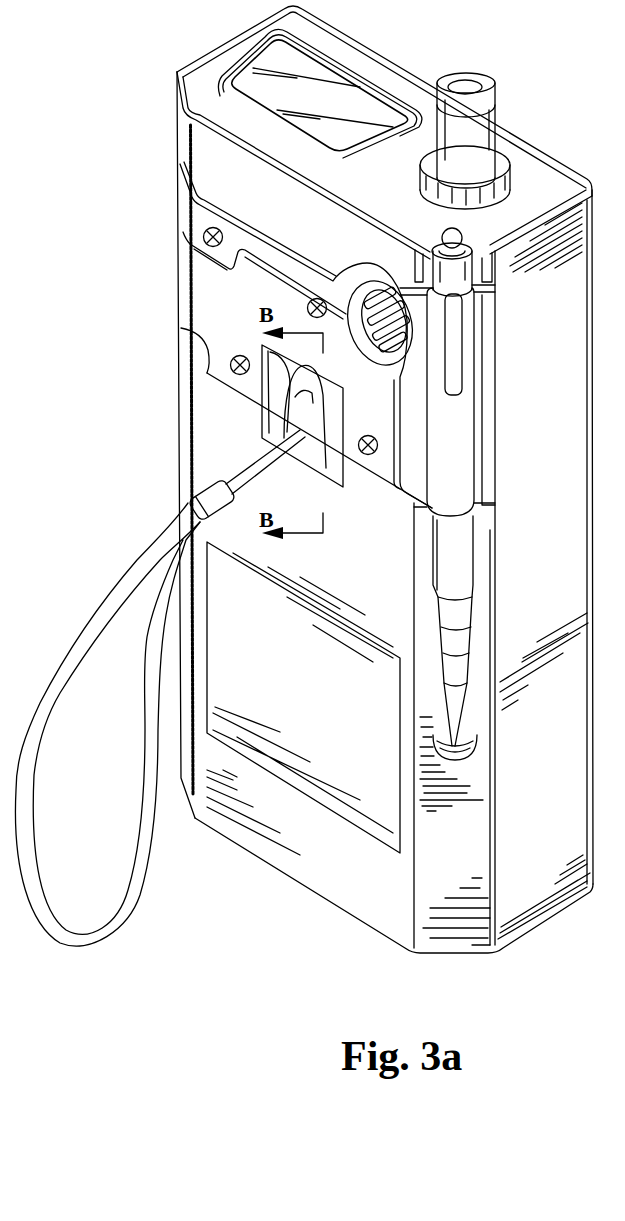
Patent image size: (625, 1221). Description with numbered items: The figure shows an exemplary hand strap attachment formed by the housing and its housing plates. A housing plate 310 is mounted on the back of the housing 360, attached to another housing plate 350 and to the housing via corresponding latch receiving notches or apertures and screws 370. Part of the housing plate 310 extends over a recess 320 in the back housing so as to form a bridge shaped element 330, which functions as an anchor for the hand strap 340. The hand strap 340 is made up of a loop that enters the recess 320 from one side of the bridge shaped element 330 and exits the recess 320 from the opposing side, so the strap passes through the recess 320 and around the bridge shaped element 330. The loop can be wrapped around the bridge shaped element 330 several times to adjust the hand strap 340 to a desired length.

The housing plate 310 is at (398, 486).
The recess 320 is at (231, 418).
The bridge shaped element 330 is at (326, 425).
The hand strap 340 is at (147, 552).
The housing plate 350 is at (305, 368).
The housing 360 is at (207, 142).
The screws 370 is at (206, 228).